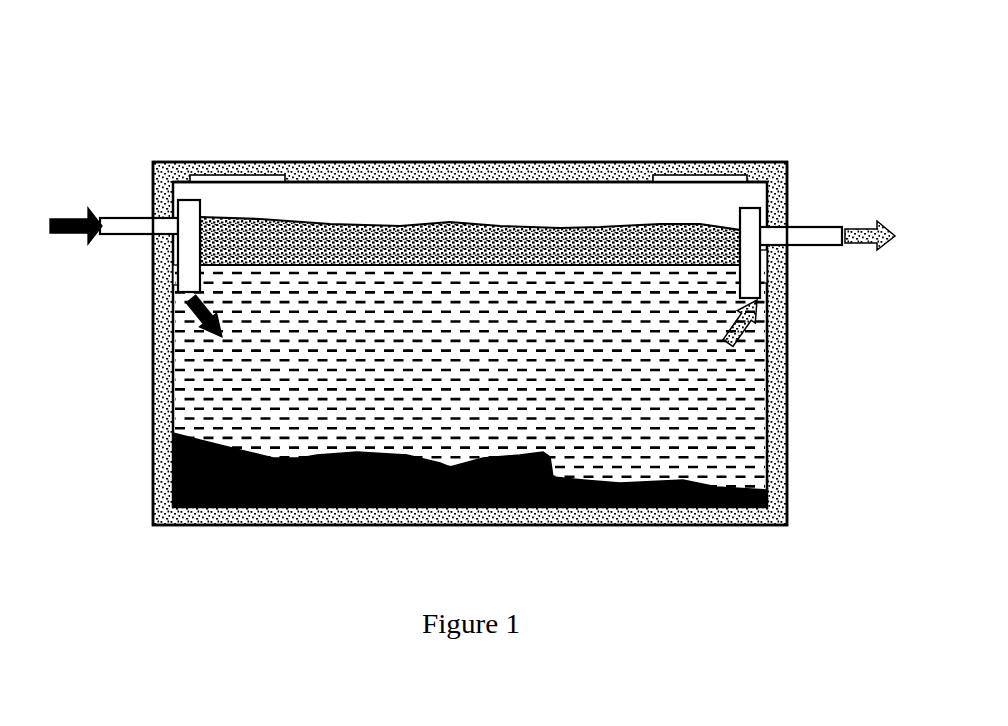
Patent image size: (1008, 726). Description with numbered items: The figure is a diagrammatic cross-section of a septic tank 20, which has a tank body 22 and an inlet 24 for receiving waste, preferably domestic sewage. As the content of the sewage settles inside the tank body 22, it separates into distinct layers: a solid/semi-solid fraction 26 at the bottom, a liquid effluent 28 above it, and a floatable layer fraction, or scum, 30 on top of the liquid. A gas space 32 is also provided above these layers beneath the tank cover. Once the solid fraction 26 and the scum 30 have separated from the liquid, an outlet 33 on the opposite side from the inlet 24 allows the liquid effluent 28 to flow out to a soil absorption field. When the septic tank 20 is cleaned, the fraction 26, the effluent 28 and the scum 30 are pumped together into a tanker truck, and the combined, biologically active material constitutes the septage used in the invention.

The septic tank 20 is at (470, 262).
The tank body 22 is at (524, 343).
The inlet 24 is at (122, 249).
The solid/semi-solid fraction 26 is at (470, 470).
The liquid effluent 28 is at (470, 384).
The floatable layer fraction 30 is at (470, 241).
The gas space 32 is at (470, 204).
The outlet 33 is at (813, 258).